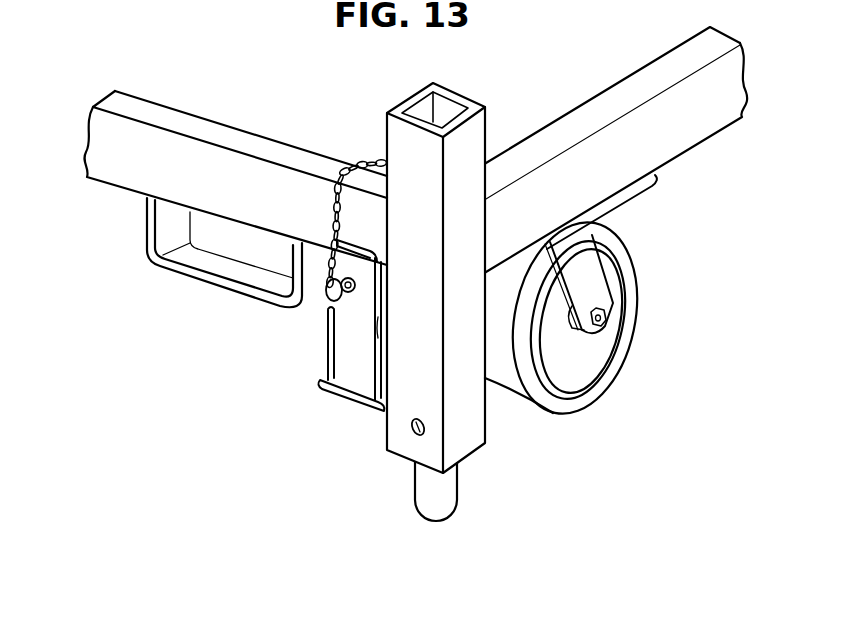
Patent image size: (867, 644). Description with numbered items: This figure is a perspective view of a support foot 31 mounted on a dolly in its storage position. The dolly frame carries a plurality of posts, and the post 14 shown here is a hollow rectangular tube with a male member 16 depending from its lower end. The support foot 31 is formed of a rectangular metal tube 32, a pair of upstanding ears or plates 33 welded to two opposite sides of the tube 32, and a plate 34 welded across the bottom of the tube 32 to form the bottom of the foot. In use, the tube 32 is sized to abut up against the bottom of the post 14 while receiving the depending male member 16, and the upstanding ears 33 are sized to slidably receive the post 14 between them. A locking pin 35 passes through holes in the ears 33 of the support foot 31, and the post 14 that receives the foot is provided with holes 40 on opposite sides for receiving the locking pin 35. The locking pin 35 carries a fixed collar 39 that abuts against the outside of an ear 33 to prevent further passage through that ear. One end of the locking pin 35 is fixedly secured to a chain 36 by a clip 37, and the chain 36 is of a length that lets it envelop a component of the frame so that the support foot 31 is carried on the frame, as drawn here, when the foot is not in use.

The post 14 is at (477, 316).
The male member 16 is at (445, 492).
The support foot 31 is at (316, 307).
The rectangular metal tube 32 is at (384, 344).
The upstanding ears 33 is at (357, 266).
The plate 34 is at (353, 405).
The locking pin 35 is at (326, 296).
The chain 36 is at (328, 225).
The clip 37 is at (326, 302).
The fixed collar 39 is at (352, 287).
The holes 40 is at (418, 435).